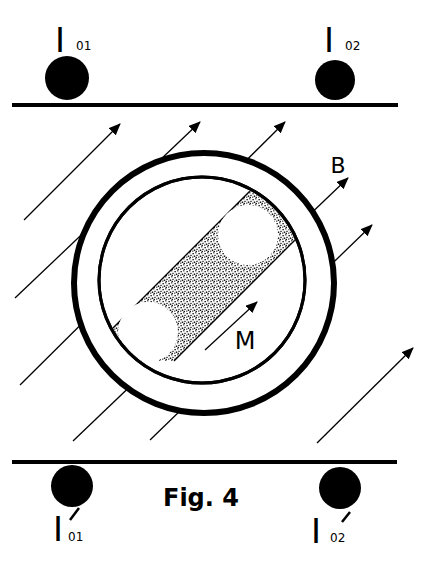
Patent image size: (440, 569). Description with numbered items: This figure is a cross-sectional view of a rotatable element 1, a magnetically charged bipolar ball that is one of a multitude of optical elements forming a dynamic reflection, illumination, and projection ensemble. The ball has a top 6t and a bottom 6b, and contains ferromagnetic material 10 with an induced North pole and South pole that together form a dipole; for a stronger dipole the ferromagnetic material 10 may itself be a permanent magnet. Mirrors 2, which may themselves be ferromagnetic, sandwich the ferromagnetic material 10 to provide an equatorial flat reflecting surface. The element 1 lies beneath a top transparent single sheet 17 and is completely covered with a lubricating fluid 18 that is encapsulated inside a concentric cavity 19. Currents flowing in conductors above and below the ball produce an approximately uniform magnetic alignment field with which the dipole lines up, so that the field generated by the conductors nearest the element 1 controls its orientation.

The rotatable element 1 is at (207, 287).
The mirrors 2 is at (228, 205).
The top 6t is at (112, 297).
The bottom 6b is at (245, 372).
The ferromagnetic material 10 is at (227, 261).
The top transparent single sheet 17 is at (308, 118).
The lubricating fluid 18 is at (288, 362).
The concentric cavity 19 is at (336, 281).